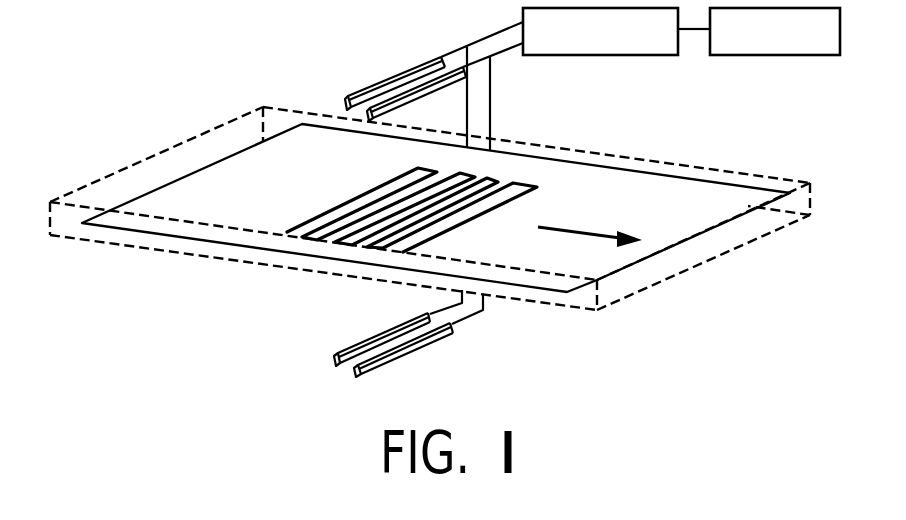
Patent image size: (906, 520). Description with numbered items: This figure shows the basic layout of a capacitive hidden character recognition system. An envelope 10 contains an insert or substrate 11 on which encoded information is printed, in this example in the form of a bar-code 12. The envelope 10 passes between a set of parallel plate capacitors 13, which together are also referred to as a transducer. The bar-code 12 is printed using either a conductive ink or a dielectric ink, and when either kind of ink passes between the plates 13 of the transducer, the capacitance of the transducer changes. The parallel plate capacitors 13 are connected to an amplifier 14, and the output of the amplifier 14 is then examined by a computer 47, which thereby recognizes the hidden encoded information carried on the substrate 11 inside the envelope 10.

The envelope 10 is at (178, 143).
The insert (substrate) 11 is at (168, 234).
The bar-code 12 is at (358, 183).
The parallel plate capacitors (transducer) 13 is at (402, 44).
The amplifier 14 is at (616, 44).
The computer 47 is at (786, 44).